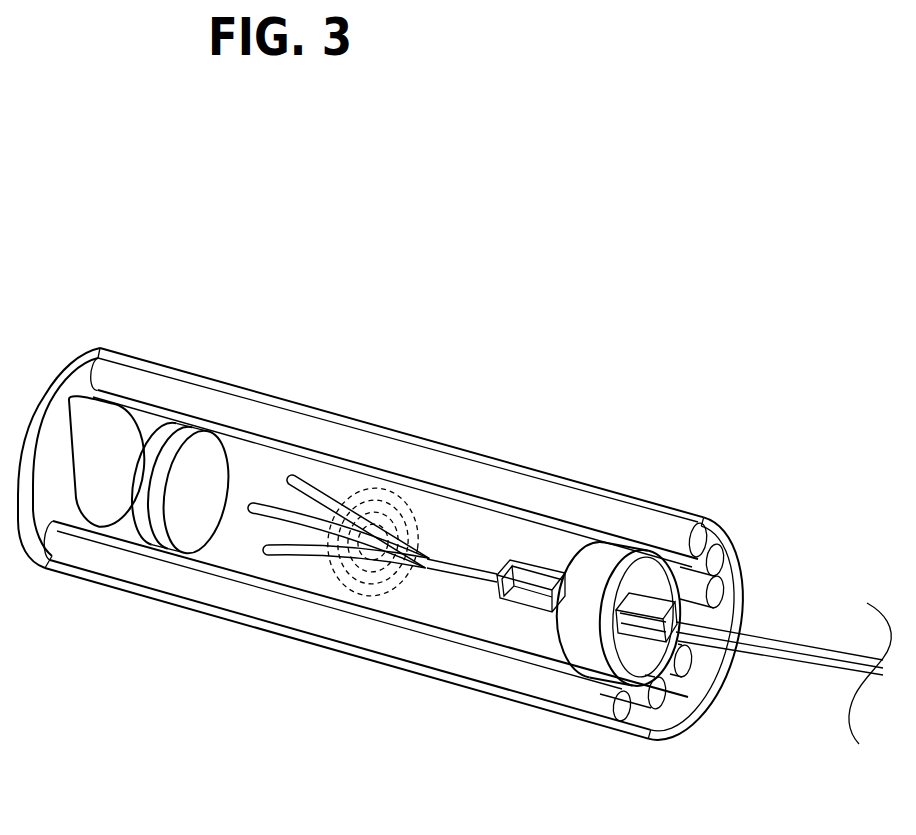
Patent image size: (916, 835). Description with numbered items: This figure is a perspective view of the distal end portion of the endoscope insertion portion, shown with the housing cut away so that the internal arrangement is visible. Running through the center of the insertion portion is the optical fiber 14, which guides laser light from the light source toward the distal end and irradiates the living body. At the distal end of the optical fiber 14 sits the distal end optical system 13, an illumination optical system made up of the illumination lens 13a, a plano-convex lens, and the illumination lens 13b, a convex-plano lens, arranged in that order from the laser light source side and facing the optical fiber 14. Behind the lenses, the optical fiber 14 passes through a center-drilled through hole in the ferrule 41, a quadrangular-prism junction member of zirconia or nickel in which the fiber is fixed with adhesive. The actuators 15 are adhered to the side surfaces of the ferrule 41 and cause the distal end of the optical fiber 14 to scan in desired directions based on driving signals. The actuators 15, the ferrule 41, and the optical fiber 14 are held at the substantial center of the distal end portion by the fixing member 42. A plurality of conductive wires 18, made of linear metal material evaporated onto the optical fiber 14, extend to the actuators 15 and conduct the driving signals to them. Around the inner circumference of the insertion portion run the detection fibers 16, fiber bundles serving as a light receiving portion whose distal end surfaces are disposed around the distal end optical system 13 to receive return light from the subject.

The detection fibers 16 is at (183, 377).
The distal end optical system 13 is at (134, 583).
The illumination lens 13a is at (155, 528).
The illumination lens 13b is at (48, 500).
The optical fiber 14 is at (443, 555).
The actuators 15 is at (520, 572).
The ferrule 41 is at (513, 575).
The fixing member 42 is at (607, 553).
The conductive wires 18 is at (793, 657).